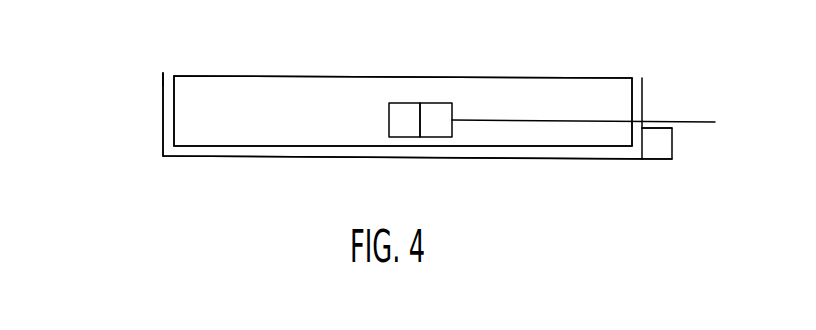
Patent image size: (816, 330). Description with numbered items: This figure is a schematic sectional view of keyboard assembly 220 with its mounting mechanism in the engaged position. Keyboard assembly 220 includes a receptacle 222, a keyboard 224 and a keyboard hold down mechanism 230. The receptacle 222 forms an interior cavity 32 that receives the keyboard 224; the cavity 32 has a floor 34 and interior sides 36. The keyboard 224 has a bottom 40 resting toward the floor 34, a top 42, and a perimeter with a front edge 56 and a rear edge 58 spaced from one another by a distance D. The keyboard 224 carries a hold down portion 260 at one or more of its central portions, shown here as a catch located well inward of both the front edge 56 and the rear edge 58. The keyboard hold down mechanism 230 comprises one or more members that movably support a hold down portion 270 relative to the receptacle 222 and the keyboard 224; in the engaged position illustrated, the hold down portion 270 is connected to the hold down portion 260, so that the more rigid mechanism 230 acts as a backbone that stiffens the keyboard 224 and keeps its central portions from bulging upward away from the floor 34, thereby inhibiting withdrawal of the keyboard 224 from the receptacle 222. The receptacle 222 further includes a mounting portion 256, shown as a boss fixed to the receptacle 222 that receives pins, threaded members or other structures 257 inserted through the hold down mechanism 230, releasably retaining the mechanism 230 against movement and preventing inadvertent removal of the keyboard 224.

The keyboard assembly 220 is at (131, 113).
The receptacle 222 is at (163, 132).
The keyboard 224 is at (345, 77).
The interior cavity 32 is at (163, 103).
The floor 34 is at (285, 153).
The interior sides 36 is at (163, 73).
The bottom 40 is at (354, 147).
The top 42 is at (520, 77).
The front edge 56 is at (176, 95).
The rear edge 58 is at (632, 89).
The keyboard hold down mechanism 230 is at (568, 121).
The mounting portion 256 is at (672, 152).
The structures 257 is at (658, 126).
The hold down portion 260 is at (406, 137).
The hold down portion 270 is at (433, 137).